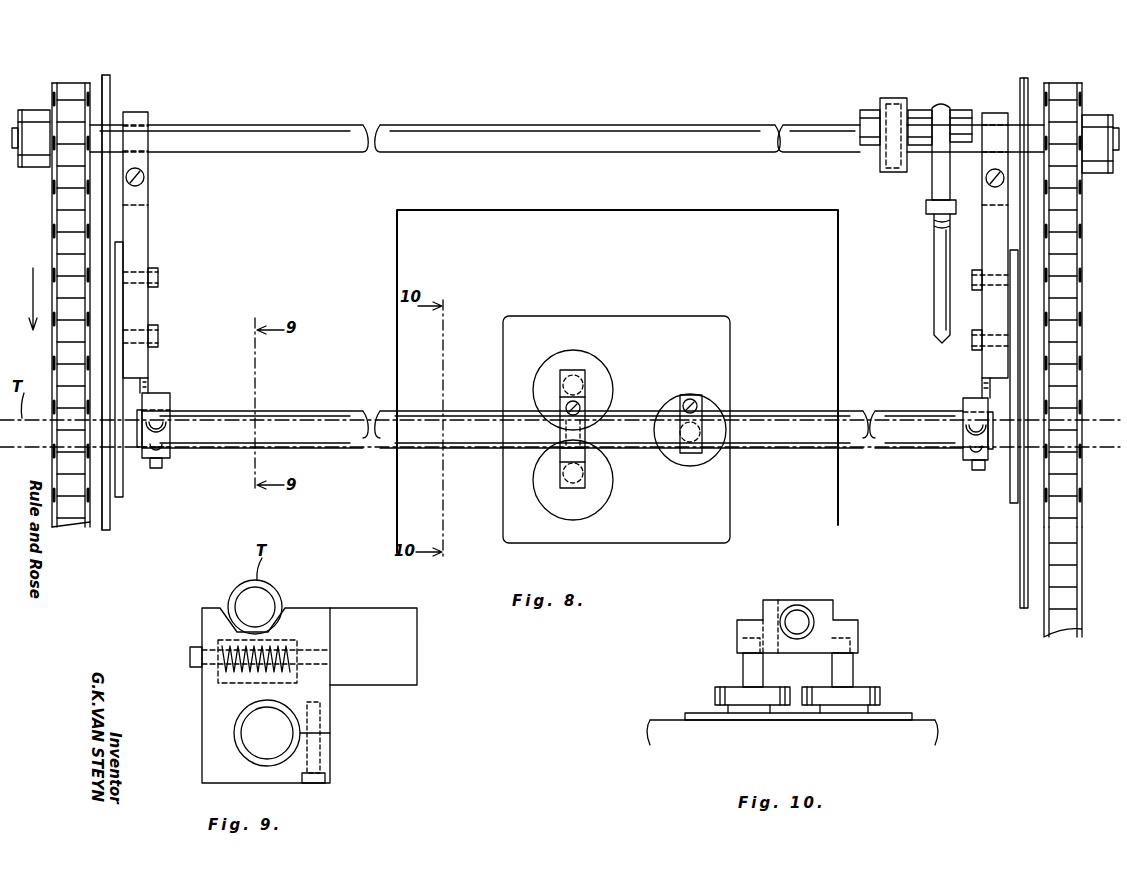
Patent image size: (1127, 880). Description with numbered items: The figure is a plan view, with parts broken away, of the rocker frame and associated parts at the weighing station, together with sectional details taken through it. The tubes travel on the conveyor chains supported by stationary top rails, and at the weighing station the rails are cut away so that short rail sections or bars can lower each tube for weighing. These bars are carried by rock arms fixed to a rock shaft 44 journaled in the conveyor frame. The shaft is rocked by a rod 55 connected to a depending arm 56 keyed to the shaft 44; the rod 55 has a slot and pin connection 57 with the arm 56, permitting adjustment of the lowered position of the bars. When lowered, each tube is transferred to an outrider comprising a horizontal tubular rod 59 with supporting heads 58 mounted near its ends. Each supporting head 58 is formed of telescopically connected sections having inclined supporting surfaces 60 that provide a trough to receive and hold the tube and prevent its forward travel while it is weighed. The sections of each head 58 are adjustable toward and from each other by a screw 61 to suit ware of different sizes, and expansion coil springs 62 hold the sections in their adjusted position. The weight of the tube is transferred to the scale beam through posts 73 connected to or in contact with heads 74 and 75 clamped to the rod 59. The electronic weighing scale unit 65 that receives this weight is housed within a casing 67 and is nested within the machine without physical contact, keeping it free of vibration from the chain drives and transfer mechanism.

In FIG. 8, the rock shaft 44 is at (291, 132).
In FIG. 8, the rod 55 is at (936, 262).
In FIG. 8, the depending arm 56 is at (905, 103).
In FIG. 8, the slot and pin connection 57 is at (858, 126).
In FIG. 9, the supporting heads 58 is at (210, 718).
In FIG. 8, the horizontal tubular rod 59 is at (894, 422).
In FIG. 9, the horizontal tubular rod 59 is at (238, 738).
In FIG. 10, the horizontal tubular rod 59 is at (806, 607).
In FIG. 9, the inclined supporting surfaces 60 is at (236, 604).
In FIG. 9, the screw 61 is at (190, 657).
In FIG. 9, the expansion coil springs 62 is at (225, 672).
In FIG. 8, the electronic weighing scale unit 65 is at (680, 316).
In FIG. 10, the electronic weighing scale unit 65 is at (897, 714).
In FIG. 8, the casing 67 is at (397, 254).
In FIG. 8, the posts 73 is at (588, 374).
In FIG. 10, the posts 73 is at (746, 670).
In FIG. 8, the head 74 is at (581, 406).
In FIG. 10, the head 74 is at (836, 626).
In FIG. 8, the head 75 is at (703, 406).